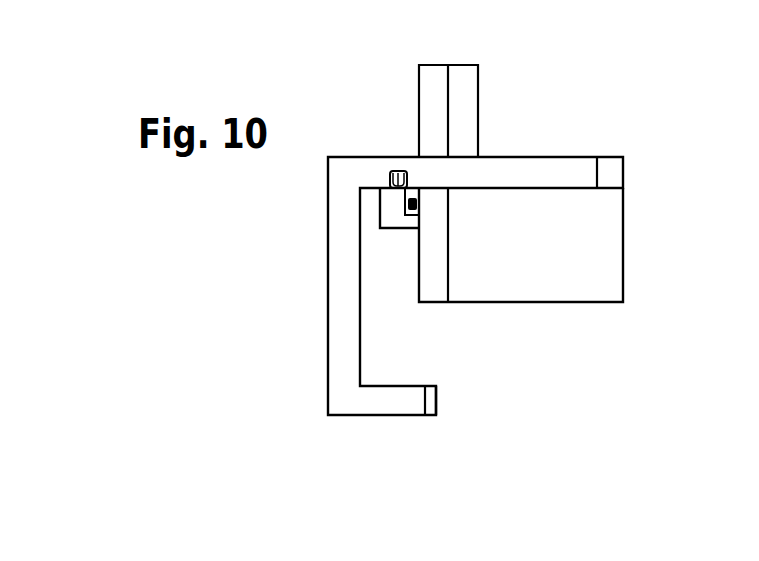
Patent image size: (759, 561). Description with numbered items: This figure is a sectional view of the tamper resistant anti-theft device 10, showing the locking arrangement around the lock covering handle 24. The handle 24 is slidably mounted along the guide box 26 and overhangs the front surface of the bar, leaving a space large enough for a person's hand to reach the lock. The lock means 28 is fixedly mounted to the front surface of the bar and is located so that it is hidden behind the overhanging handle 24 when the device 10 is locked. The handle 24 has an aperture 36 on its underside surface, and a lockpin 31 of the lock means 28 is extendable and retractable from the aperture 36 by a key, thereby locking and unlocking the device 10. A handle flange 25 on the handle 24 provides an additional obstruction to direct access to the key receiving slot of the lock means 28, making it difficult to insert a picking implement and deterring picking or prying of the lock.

The device 10 is at (543, 133).
The handle 24 is at (337, 331).
The handle flange 25 is at (407, 417).
The guide box 26 is at (627, 217).
The lock means 28 is at (393, 228).
The lockpin 31 is at (398, 170).
The aperture 36 is at (390, 170).